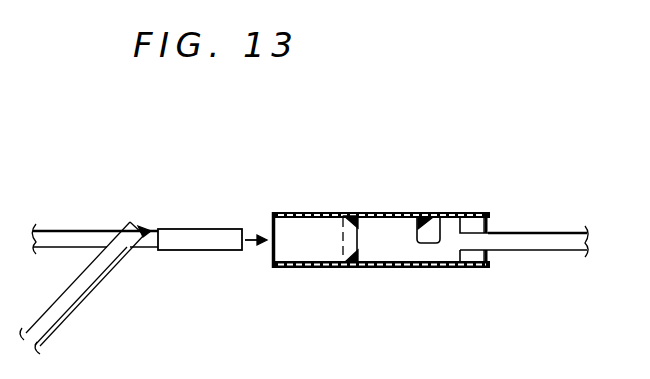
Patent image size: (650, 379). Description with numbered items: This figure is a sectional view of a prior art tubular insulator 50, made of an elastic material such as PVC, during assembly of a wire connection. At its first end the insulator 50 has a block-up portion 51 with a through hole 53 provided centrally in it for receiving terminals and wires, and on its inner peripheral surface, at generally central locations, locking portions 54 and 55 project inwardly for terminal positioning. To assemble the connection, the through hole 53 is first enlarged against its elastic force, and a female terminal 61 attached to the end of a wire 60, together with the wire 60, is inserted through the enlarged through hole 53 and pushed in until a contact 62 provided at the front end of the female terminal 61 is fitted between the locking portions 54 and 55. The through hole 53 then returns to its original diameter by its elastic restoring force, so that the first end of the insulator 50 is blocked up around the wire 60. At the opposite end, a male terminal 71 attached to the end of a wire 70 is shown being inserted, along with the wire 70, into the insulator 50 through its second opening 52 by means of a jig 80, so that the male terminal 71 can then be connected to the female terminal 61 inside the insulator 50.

The insulator 50 is at (319, 212).
The block-up portion 51 is at (490, 228).
The second opening 52 is at (261, 218).
The through hole 53 is at (488, 232).
The locking portion 54 is at (348, 214).
The locking portion 55 is at (440, 213).
The wire 60 is at (543, 242).
The female terminal 61 is at (418, 256).
The contact 62 is at (395, 228).
The wire 70 is at (80, 237).
The male terminal 71 is at (200, 235).
The jig 80 is at (83, 287).